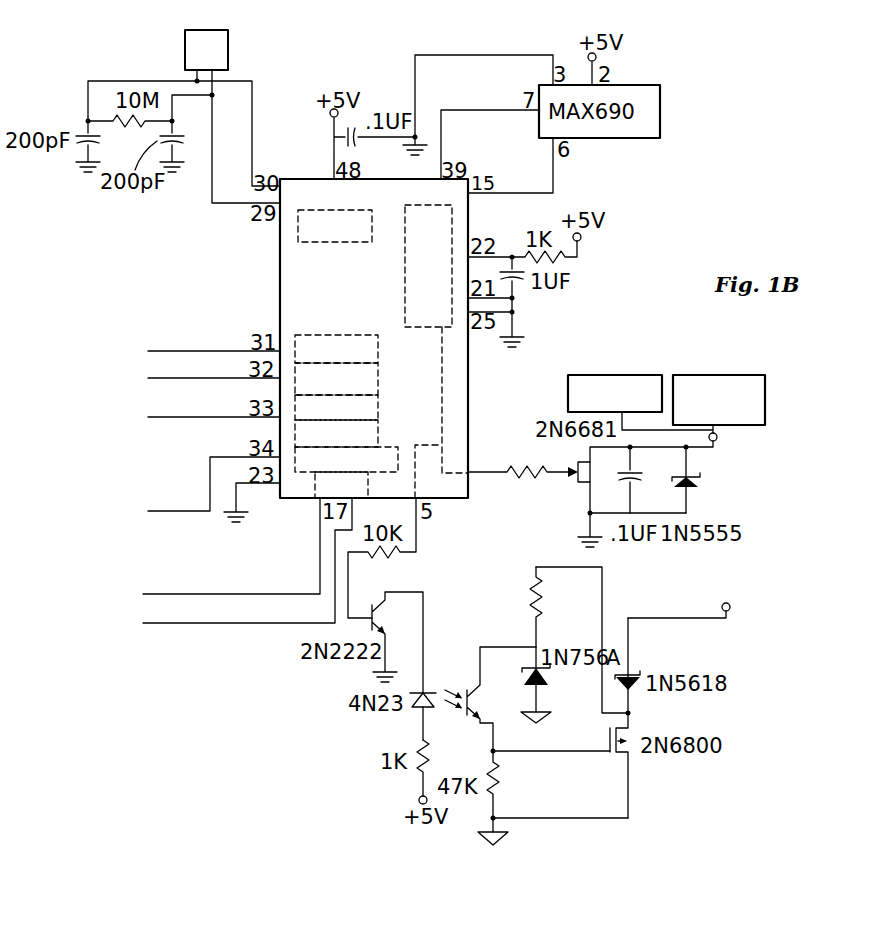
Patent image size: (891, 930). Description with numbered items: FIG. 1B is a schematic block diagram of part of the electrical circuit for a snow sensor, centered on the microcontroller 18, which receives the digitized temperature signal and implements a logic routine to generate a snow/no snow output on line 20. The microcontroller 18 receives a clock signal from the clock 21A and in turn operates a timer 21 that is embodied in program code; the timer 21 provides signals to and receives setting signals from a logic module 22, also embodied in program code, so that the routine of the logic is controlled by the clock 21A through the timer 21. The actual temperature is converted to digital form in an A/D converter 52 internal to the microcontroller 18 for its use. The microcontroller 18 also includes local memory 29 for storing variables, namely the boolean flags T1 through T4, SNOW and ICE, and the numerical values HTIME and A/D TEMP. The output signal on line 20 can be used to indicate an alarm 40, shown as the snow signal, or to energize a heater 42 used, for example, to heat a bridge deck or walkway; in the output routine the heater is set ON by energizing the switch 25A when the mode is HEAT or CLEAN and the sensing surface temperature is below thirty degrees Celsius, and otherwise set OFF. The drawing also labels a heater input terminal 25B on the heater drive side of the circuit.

The microcontroller 18 is at (280, 268).
The clock 21A is at (185, 41).
The timer 21 is at (306, 242).
The logic module 22 is at (405, 292).
The local memory 29 is at (383, 408).
The A/D converter 52 is at (368, 486).
The output line 20 is at (490, 474).
The heater 42 is at (568, 385).
The alarm 40 is at (745, 425).
The switch 25A is at (525, 630).
The heater input 25B is at (730, 612).